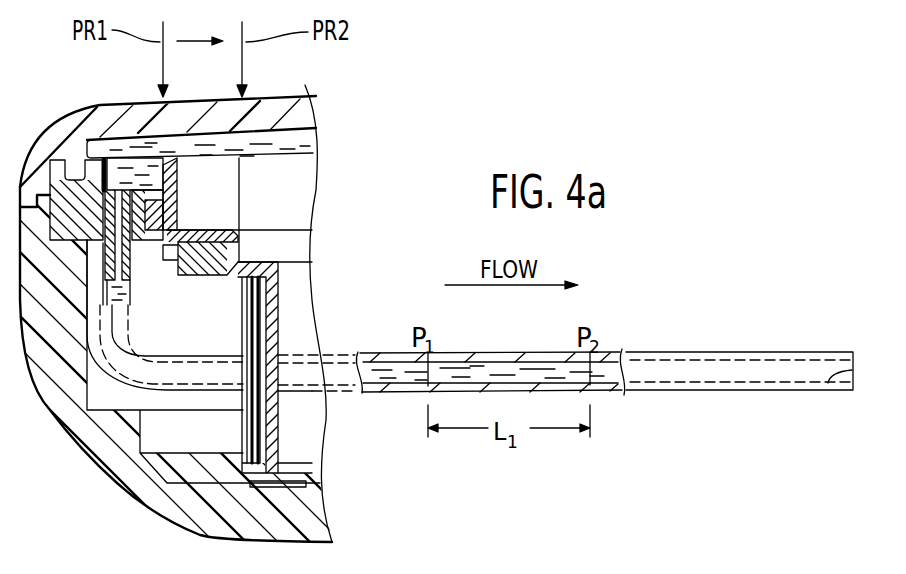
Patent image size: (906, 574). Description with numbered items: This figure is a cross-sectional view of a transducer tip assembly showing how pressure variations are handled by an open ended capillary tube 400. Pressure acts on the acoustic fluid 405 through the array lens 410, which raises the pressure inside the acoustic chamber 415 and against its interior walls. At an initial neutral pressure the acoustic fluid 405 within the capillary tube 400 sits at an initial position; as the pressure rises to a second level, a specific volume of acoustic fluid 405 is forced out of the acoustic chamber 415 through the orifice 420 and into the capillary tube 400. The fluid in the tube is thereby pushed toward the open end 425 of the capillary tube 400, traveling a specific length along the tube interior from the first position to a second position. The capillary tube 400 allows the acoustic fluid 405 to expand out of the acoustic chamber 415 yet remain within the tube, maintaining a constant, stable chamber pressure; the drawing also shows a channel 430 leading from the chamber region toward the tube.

The capillary tube 400 is at (678, 355).
The acoustic fluid 405 is at (276, 133).
The array lens 410 is at (297, 112).
The acoustic chamber 415 is at (312, 134).
The orifice 420 is at (115, 195).
The open end 425 is at (828, 383).
The elbow channel 430 is at (133, 262).